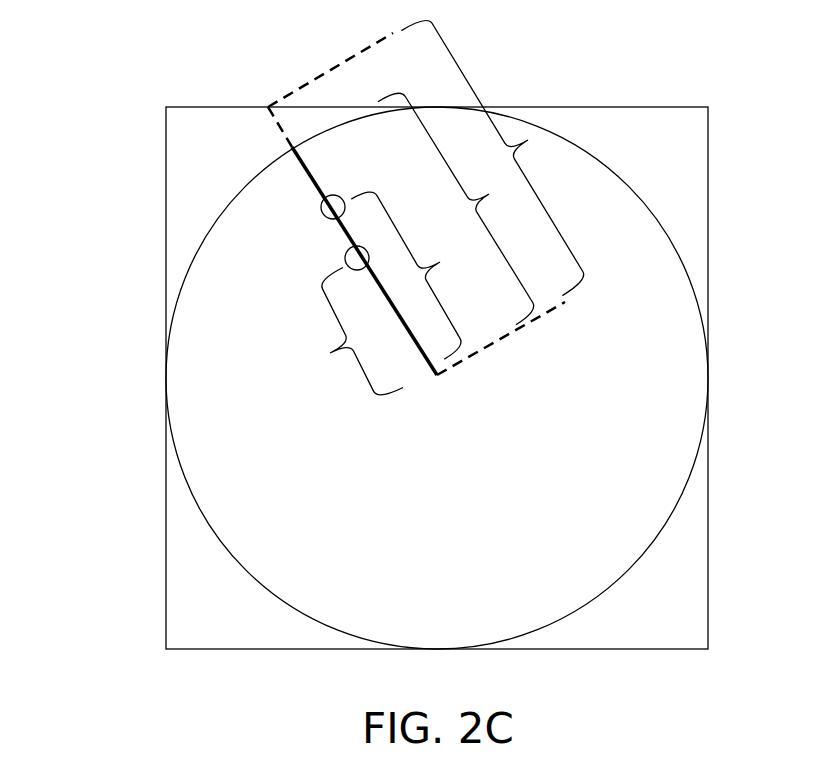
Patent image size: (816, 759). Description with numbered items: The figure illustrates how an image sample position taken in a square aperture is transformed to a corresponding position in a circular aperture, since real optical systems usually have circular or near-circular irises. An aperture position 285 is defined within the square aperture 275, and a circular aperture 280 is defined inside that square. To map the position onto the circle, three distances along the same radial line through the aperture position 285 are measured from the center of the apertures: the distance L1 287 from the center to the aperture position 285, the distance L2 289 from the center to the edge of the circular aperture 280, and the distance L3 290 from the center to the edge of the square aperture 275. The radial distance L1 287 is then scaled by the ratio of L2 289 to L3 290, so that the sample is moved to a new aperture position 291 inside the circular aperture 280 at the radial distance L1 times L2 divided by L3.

The square aperture 275 is at (163, 257).
The circular aperture 280 is at (222, 538).
The aperture position 285 is at (330, 206).
The distance L1 287 is at (418, 275).
The distance L2 289 is at (456, 208).
The distance L3 290 is at (493, 158).
The new aperture position 291 is at (318, 331).